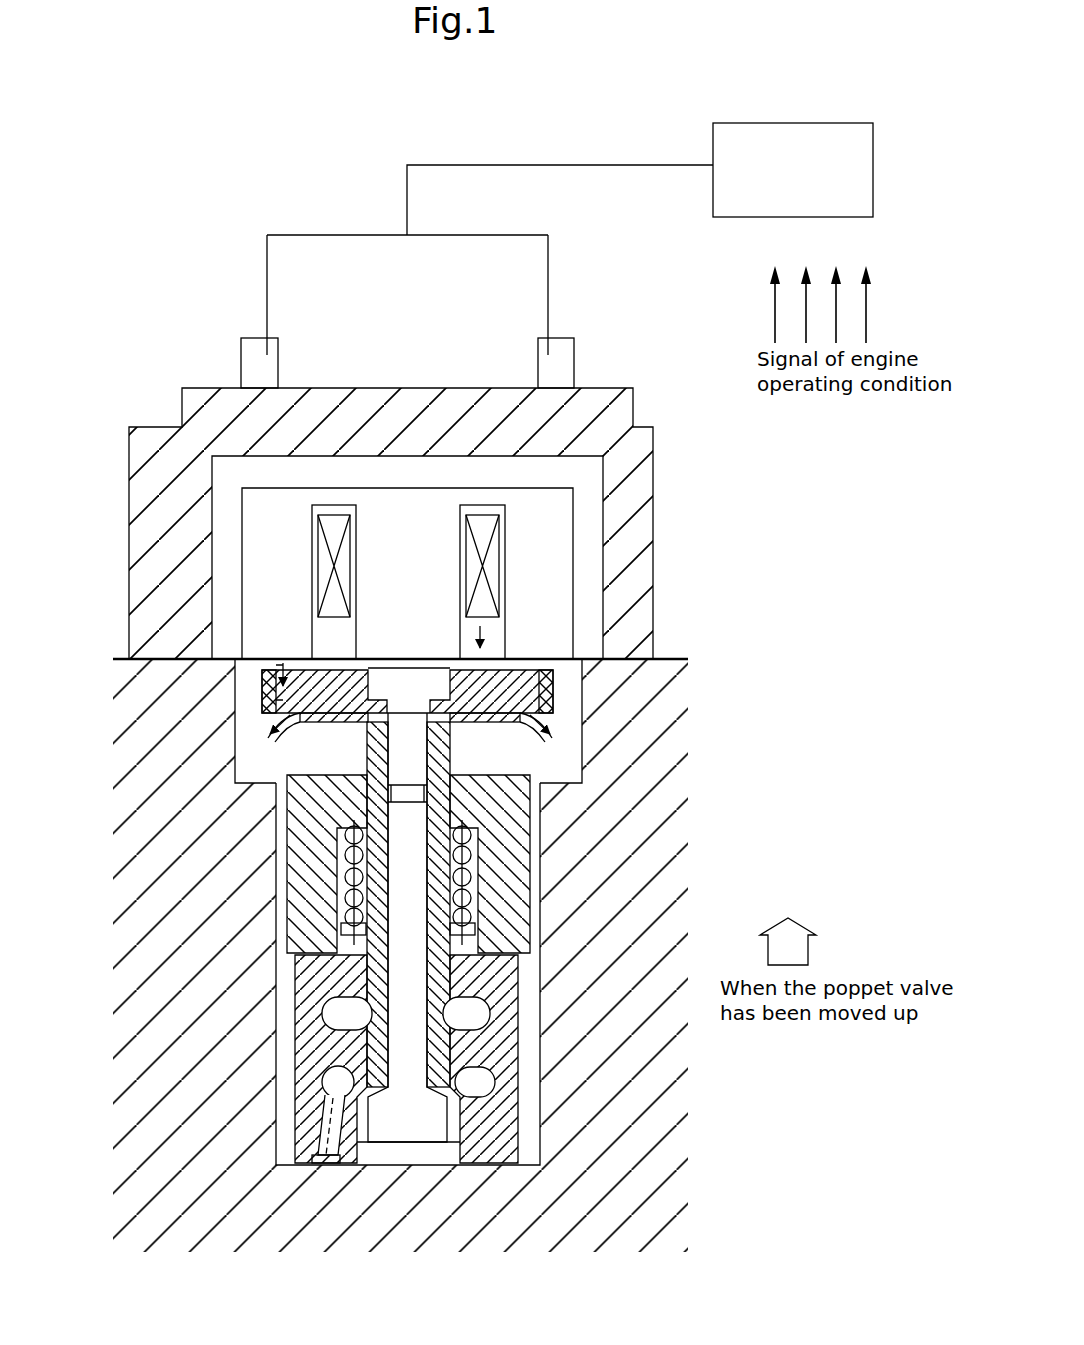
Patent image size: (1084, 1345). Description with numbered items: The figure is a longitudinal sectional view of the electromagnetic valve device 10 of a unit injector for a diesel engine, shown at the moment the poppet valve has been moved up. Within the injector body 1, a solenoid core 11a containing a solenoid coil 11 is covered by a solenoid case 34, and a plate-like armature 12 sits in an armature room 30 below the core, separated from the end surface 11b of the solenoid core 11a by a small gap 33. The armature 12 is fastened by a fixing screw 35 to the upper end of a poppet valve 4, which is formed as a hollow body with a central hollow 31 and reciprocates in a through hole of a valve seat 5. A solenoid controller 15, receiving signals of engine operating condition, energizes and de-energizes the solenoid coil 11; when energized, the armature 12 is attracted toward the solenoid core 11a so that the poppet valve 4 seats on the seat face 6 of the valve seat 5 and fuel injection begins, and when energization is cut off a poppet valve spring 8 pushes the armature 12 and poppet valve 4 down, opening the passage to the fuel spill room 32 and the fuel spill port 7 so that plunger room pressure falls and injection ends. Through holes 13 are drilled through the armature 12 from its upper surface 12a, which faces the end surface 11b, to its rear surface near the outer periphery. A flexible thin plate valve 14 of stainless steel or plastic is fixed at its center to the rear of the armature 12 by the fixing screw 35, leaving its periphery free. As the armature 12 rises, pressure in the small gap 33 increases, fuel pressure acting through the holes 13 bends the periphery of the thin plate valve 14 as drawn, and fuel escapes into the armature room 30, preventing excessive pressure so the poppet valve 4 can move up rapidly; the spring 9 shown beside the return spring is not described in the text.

The injector body 1 is at (615, 1190).
The poppet valve 4 is at (372, 970).
The valve seat 5 is at (505, 1097).
The seat face 6 is at (507, 1057).
The fuel spill port 7 is at (490, 1013).
The poppet valve spring 8 is at (545, 896).
The left sleeve with spring 9 is at (300, 866).
The electromagnetic valve device 10 is at (599, 385).
The solenoid coil 11 is at (545, 560).
The solenoid core 11a is at (495, 556).
The end surface of solenoid core 11b is at (528, 655).
The armature 12 is at (545, 690).
The upper surface of armature 12a is at (350, 668).
The through holes 13 is at (262, 700).
The thin plate valve 14 is at (545, 770).
The solenoid controller 15 is at (570, 239).
The armature room 30 is at (300, 758).
The central hollow 31 is at (407, 1077).
The fuel spill room 32 is at (340, 1013).
The small gap 33 is at (330, 655).
The solenoid case 34 is at (610, 410).
The fixing screw 35 is at (262, 689).